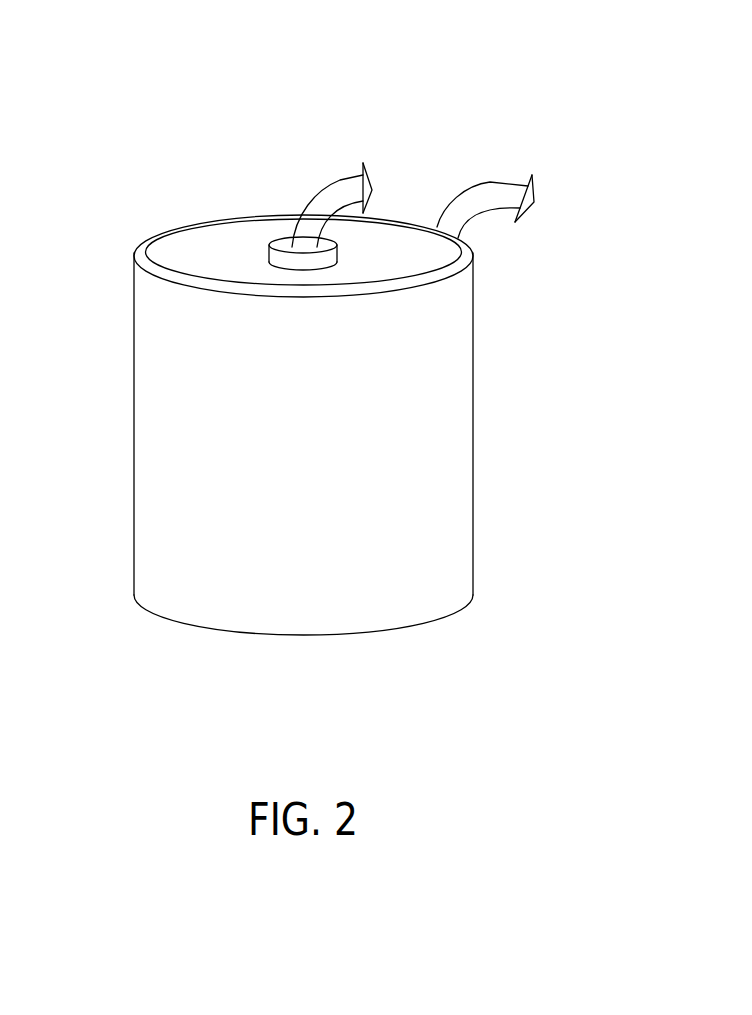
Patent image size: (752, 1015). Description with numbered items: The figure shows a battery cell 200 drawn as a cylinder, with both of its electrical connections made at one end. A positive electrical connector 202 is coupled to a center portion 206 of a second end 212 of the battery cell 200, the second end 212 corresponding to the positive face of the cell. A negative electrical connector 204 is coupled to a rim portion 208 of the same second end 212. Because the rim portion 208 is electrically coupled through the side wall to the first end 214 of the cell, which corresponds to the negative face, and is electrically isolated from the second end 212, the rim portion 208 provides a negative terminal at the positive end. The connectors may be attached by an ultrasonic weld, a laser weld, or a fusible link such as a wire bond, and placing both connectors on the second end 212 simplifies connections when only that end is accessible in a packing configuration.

The battery cell 200 is at (80, 46).
The positive electrical connector 202 is at (338, 190).
The negative electrical connector 204 is at (503, 190).
The center portion 206 is at (282, 237).
The rim portion 208 is at (475, 258).
The second end 212 is at (182, 257).
The first end 214 is at (183, 624).